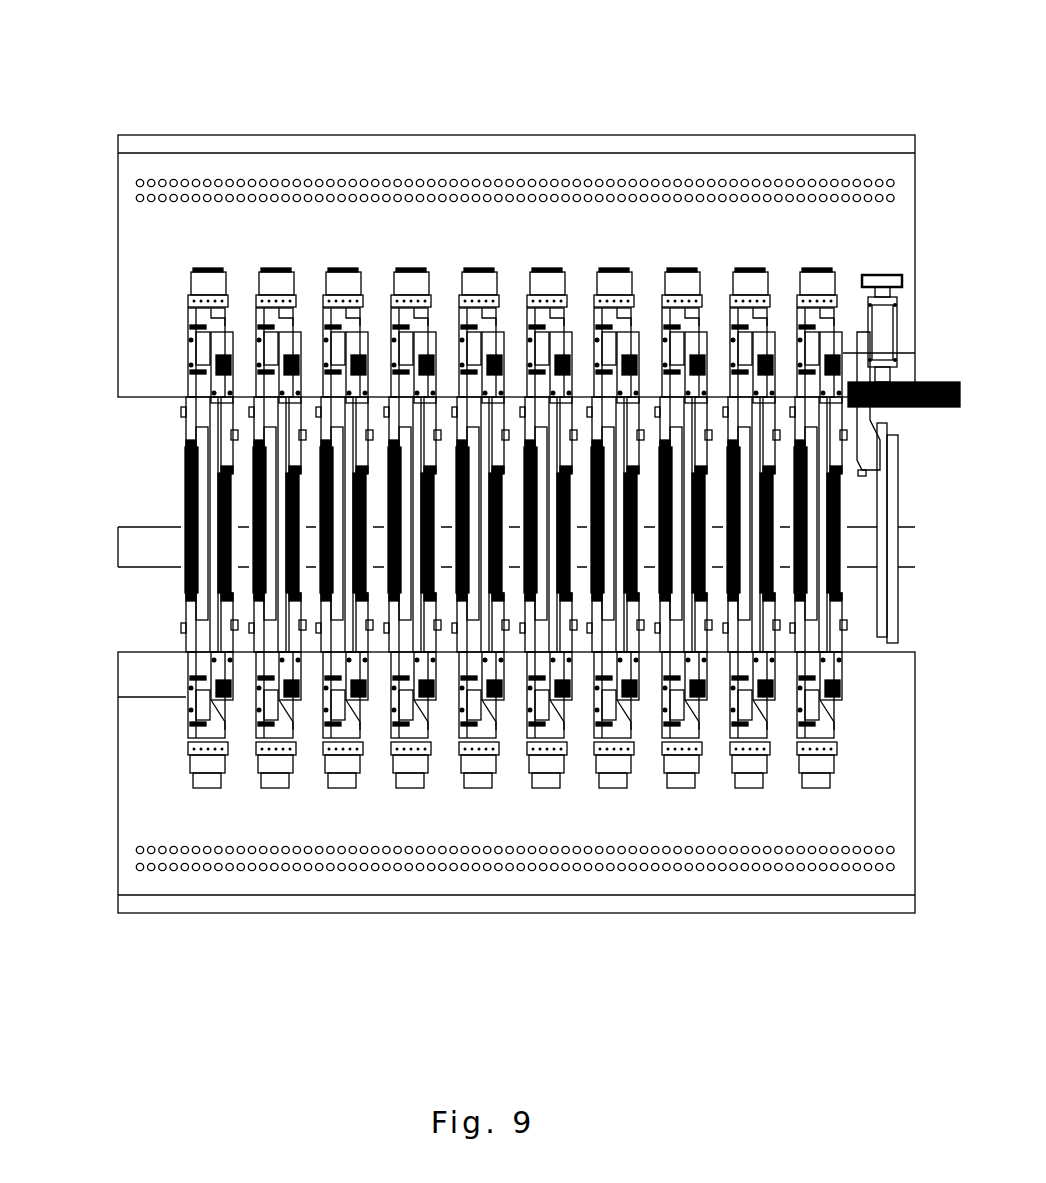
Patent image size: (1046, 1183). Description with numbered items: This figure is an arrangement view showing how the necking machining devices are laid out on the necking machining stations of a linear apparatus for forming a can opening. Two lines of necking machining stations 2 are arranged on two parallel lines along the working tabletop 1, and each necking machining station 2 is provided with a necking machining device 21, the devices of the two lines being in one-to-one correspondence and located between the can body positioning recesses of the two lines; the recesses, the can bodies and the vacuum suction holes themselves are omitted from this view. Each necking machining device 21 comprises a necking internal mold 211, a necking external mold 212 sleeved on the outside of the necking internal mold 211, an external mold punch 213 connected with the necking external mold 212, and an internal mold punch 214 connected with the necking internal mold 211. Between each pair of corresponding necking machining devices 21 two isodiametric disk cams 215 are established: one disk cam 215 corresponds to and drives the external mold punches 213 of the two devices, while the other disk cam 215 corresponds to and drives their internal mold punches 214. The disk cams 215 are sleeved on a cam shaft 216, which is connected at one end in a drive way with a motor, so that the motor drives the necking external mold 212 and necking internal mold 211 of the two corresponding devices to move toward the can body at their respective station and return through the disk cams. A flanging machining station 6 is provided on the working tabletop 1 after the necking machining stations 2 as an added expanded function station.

The working tabletop 1 is at (160, 165).
The necking machining station 2 is at (515, 519).
The flanging machining station 6 is at (875, 208).
The necking machining device 21 is at (143, 540).
The necking internal mold 211 is at (136, 532).
The necking external mold 212 is at (138, 535).
The external mold punch 213 is at (141, 538).
The internal mold punch 214 is at (139, 539).
The disk cam 215 is at (149, 518).
The cam shaft 216 is at (148, 552).